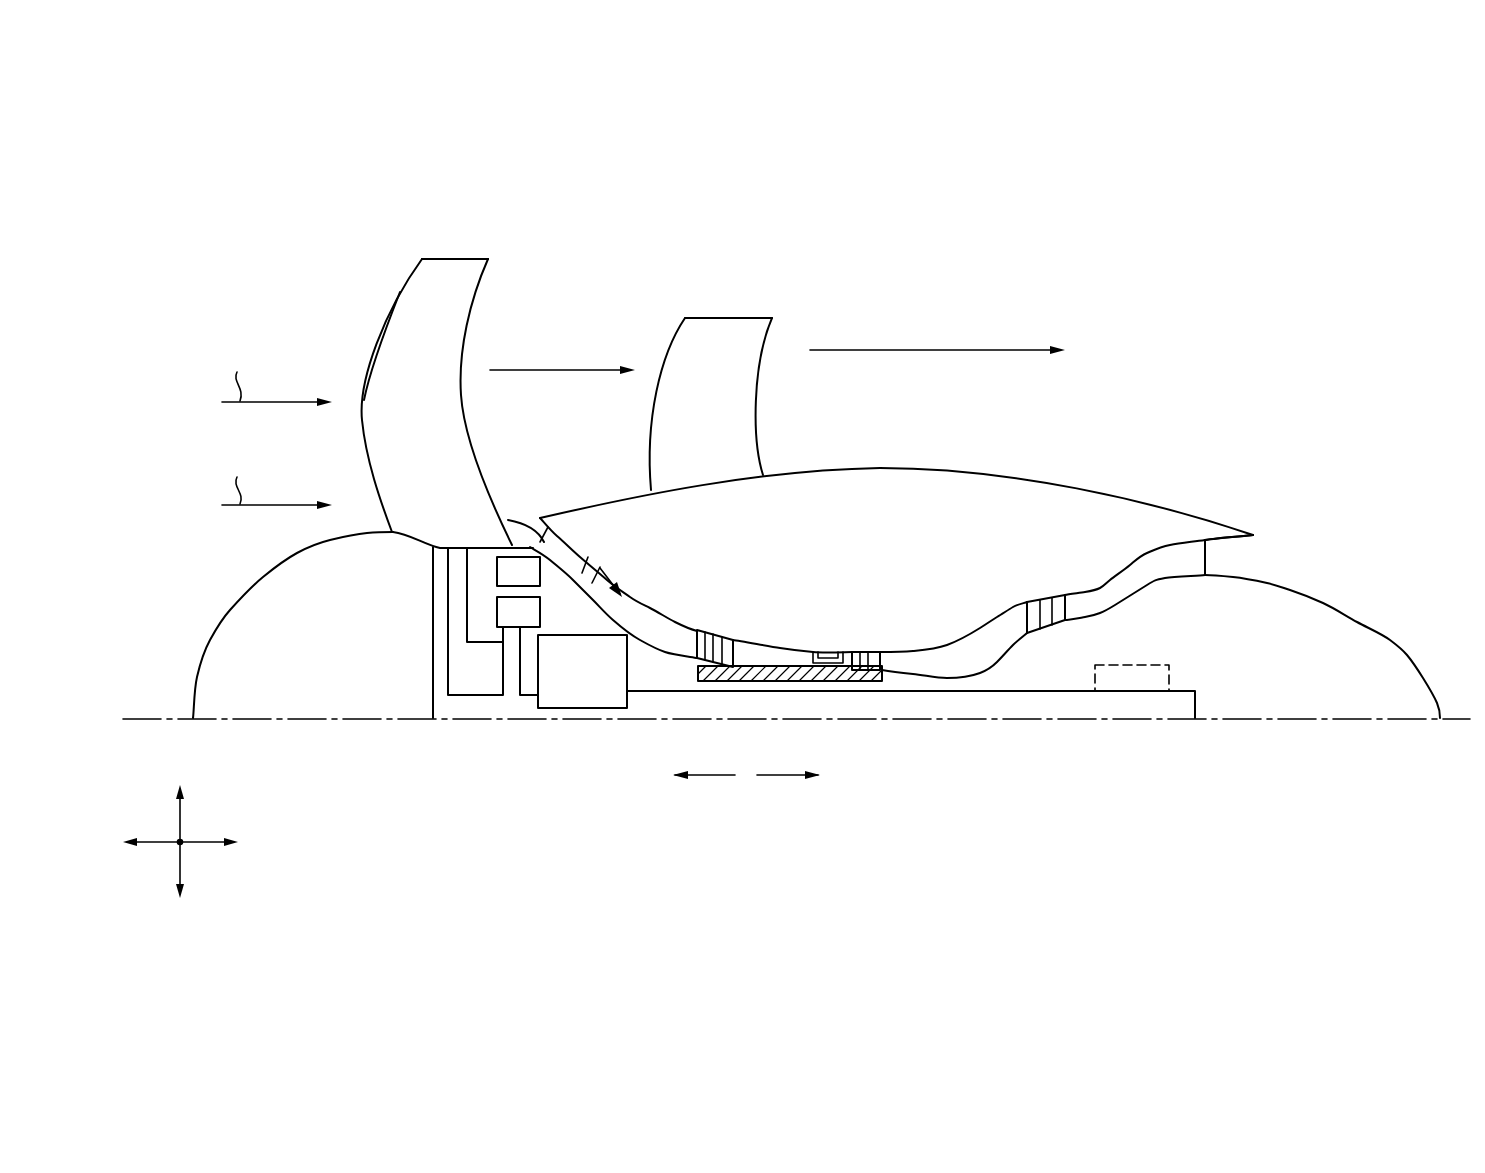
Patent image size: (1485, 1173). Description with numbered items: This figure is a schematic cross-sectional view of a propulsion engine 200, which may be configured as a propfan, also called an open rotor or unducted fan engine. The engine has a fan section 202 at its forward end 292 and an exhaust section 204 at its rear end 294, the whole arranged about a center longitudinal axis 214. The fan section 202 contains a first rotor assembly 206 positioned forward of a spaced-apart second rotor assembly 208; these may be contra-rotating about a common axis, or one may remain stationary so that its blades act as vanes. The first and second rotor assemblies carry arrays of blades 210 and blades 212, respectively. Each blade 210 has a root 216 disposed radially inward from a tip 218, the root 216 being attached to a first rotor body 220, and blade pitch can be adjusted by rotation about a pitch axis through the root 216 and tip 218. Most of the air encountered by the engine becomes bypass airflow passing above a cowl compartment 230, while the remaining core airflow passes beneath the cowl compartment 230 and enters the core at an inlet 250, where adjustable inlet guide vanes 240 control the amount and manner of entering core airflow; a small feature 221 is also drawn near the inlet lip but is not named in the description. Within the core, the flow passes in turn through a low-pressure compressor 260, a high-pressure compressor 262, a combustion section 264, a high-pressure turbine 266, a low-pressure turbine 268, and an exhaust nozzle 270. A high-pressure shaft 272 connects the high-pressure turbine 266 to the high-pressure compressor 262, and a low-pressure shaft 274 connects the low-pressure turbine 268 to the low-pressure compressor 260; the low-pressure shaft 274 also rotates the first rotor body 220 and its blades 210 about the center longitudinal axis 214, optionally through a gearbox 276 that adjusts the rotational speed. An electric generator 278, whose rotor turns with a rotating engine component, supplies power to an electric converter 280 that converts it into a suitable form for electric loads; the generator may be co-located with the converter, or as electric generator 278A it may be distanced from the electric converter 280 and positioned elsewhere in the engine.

The propulsion engine 200 is at (197, 216).
The fan section 202 is at (356, 368).
The exhaust section 204 is at (1323, 545).
The first rotor assembly 206 is at (483, 358).
The second rotor assembly 208 is at (785, 342).
The blades 210 is at (408, 309).
The blades 212 is at (707, 328).
The center longitudinal axis 214 is at (152, 717).
The root 216 is at (462, 523).
The tip 218 is at (457, 258).
The first rotor body 220 is at (403, 531).
The inlet lip 221 is at (537, 553).
The cowl compartment 230 is at (653, 517).
The inlet guide vanes 240 is at (546, 534).
The inlet 250 is at (527, 514).
The low-pressure compressor 260 is at (613, 563).
The high-pressure compressor 262 is at (720, 630).
The combustion section 264 is at (825, 652).
The high-pressure turbine 266 is at (871, 648).
The low-pressure turbine 268 is at (1026, 600).
The exhaust nozzle 270 is at (1252, 553).
The high-pressure shaft 272 is at (745, 674).
The low-pressure shaft 274 is at (973, 705).
The gearbox 276 is at (578, 700).
The electric generator 278 is at (497, 611).
The electric generator 278A is at (1137, 682).
The electric converter 280 is at (497, 573).
The forward end 292 is at (215, 620).
The rear end 294 is at (1392, 640).